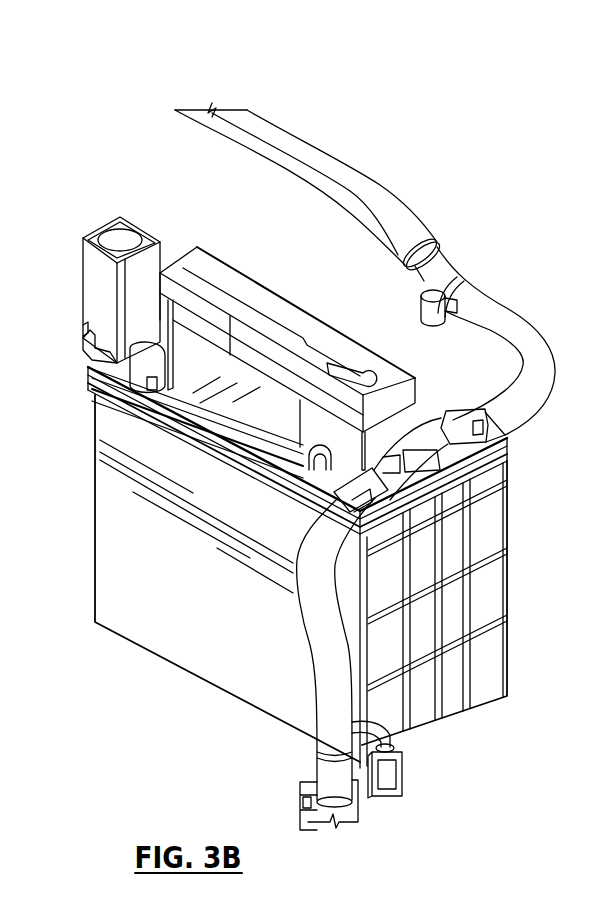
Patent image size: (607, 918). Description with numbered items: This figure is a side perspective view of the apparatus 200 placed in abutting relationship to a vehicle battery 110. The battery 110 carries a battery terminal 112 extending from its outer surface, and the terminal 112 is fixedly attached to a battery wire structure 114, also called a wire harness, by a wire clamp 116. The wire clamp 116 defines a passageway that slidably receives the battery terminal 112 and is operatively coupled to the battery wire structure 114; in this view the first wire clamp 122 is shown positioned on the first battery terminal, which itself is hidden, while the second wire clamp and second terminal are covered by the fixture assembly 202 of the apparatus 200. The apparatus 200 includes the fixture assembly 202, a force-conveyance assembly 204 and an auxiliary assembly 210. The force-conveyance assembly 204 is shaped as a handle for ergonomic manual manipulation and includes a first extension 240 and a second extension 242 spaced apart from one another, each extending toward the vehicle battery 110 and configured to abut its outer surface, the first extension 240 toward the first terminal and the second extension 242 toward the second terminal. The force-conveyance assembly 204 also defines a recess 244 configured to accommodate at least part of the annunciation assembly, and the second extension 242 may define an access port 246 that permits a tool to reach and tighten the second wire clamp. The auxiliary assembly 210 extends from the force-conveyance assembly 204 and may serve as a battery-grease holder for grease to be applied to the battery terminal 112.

The vehicle battery 110 is at (420, 707).
The battery terminal 112 is at (0, 363).
The battery wire structure 114 is at (357, 173).
The wire clamp 116 is at (27, 211).
The first wire clamp 122 is at (80, 328).
The apparatus 200 is at (319, 87).
The fixture assembly 202 is at (285, 193).
The force-conveyance assembly 204 is at (257, 283).
The auxiliary assembly 210 is at (93, 233).
The first extension 240 is at (193, 352).
The second extension 242 is at (370, 432).
The recess 244 is at (350, 363).
The access port 246 is at (320, 450).